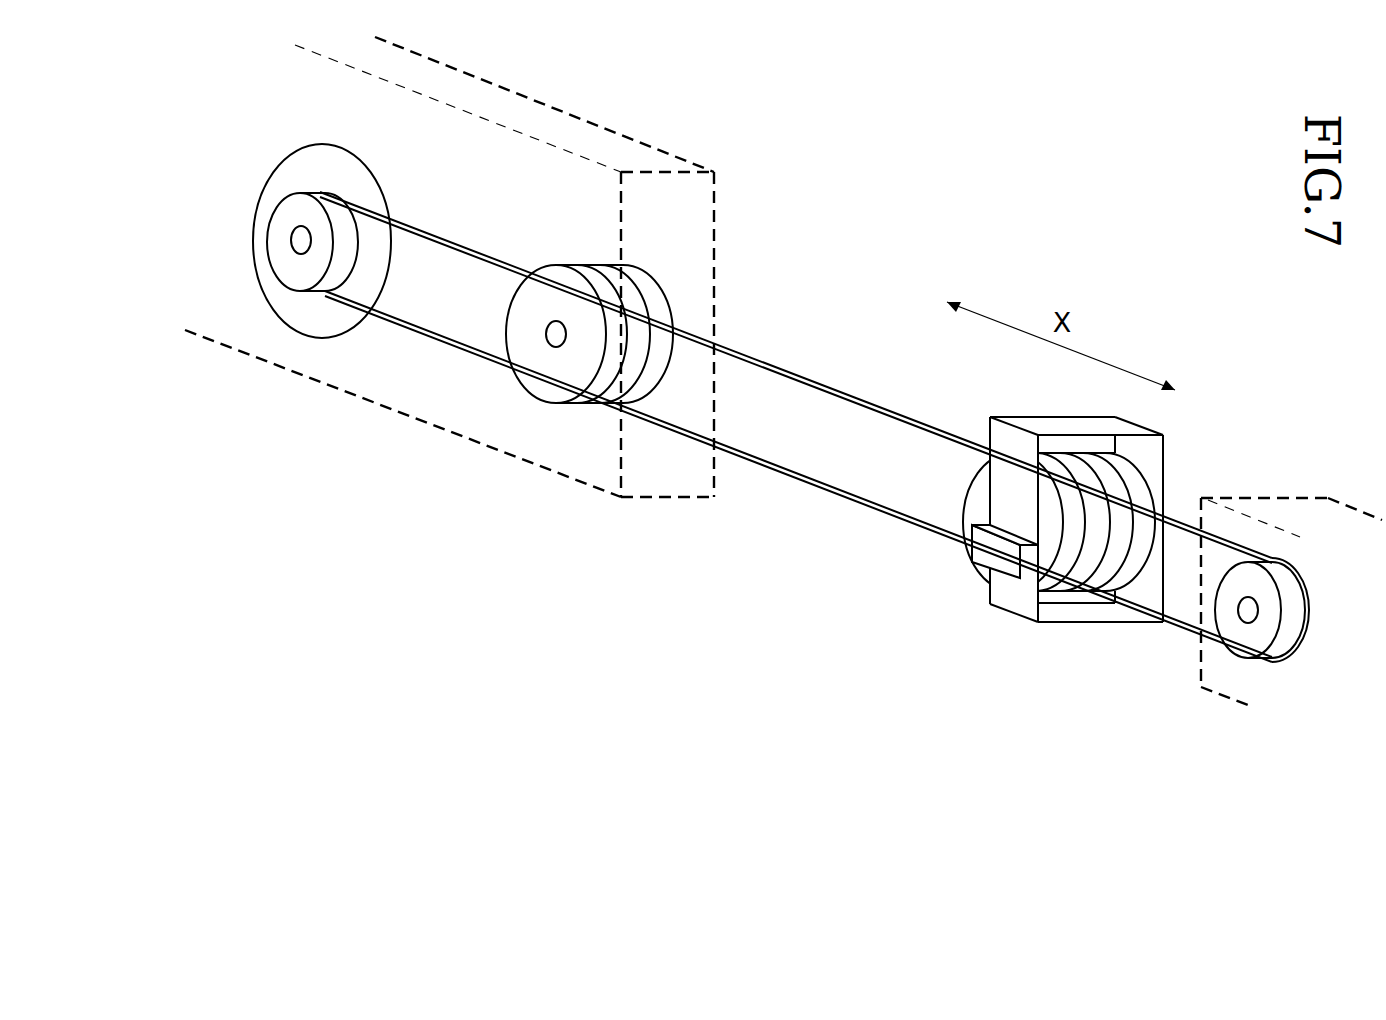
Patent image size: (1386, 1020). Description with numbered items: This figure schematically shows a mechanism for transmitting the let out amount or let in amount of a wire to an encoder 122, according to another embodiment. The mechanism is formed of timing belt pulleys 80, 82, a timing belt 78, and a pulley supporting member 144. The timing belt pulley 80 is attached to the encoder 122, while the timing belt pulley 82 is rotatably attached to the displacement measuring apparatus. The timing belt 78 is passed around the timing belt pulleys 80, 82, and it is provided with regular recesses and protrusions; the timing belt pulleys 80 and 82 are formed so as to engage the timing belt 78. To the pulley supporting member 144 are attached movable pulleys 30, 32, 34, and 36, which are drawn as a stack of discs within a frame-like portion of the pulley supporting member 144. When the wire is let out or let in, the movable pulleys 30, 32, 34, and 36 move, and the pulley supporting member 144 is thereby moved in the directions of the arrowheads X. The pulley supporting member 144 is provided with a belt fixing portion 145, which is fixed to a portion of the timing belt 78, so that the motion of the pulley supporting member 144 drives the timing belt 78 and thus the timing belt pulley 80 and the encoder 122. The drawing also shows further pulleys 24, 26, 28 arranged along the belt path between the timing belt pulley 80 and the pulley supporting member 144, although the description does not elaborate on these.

The pulley 24 is at (660, 307).
The pulley 26 is at (630, 290).
The pulley 28 is at (588, 268).
The movable pulley 30 is at (1133, 470).
The movable pulley 32 is at (1118, 487).
The movable pulley 34 is at (1080, 470).
The movable pulley 36 is at (1048, 465).
The timing belt 78 is at (800, 485).
The timing belt pulley 80 is at (293, 213).
The timing belt pulley 82 is at (1238, 640).
The encoder 122 is at (280, 341).
The pulley supporting member 144 is at (1022, 607).
The belt fixing portion 145 is at (983, 555).